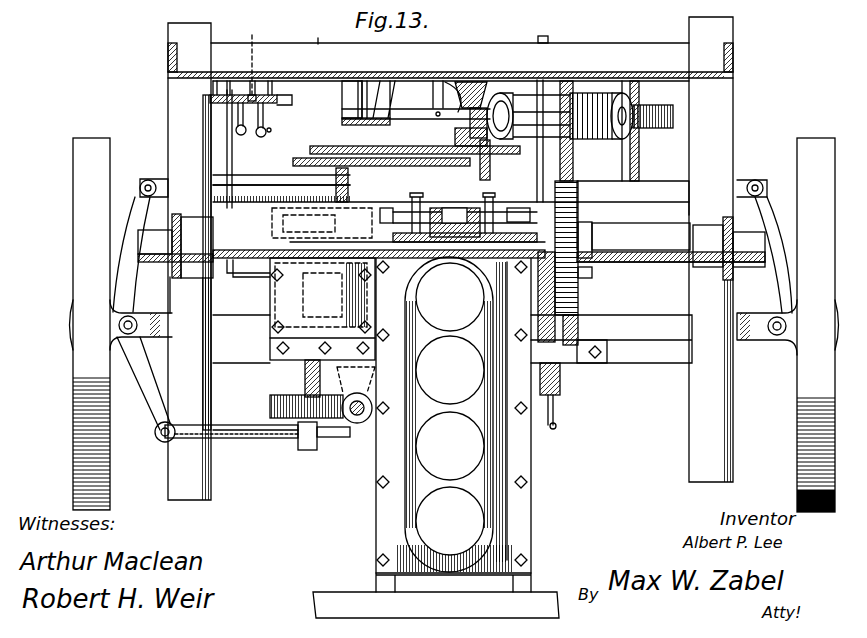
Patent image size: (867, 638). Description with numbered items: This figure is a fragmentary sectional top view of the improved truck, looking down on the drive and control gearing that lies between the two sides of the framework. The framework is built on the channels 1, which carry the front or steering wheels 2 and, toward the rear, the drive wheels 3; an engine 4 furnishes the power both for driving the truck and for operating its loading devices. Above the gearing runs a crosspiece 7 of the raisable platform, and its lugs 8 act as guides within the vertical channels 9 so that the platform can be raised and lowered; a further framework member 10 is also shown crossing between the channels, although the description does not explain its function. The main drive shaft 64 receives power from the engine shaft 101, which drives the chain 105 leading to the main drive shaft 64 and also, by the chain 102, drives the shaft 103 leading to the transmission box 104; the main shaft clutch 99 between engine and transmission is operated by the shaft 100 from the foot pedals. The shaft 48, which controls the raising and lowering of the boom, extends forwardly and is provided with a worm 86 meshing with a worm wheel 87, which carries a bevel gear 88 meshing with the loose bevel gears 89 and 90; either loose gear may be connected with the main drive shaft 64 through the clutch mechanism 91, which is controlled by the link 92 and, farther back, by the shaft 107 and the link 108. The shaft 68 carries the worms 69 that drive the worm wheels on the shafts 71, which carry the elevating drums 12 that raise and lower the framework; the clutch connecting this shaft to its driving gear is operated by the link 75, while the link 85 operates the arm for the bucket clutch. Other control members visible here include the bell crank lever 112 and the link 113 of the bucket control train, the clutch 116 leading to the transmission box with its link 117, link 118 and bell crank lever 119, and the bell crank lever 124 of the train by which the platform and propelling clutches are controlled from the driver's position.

The channel 1 is at (200, 492).
The front or steering wheel 2 is at (93, 150).
The drive wheel 3 is at (445, 601).
The engine 4 is at (493, 478).
The crosspiece 7 is at (318, 40).
The lug 8 is at (200, 62).
The vertical channel 9 is at (170, 67).
The main shaft 10 is at (194, 266).
The elevating drum 12 is at (190, 220).
The shaft 48 is at (640, 165).
The main drive shaft 64 is at (490, 165).
The shaft 68 is at (573, 160).
The worm 69 is at (592, 275).
The shaft 71 is at (663, 262).
The link 75 is at (255, 36).
The link 85 is at (548, 40).
The worm 86 is at (645, 105).
The worm wheel 87 is at (608, 92).
The bevel gear 88 is at (515, 95).
The loose bevel gear 89 is at (478, 82).
The loose bevel gear 90 is at (457, 138).
The clutch mechanism 91 is at (447, 82).
The link 92 is at (405, 113).
The main shaft clutch 99 is at (485, 207).
The shaft 100 is at (379, 249).
The engine shaft 101 is at (424, 210).
The chain 102 is at (300, 160).
The shaft 103 is at (327, 175).
The transmission box 104 is at (270, 297).
The chain 105 is at (335, 147).
The shaft 107 is at (398, 81).
The link 108 is at (350, 81).
The bell crank lever 112 is at (556, 410).
The link 113 is at (558, 426).
The clutch 116 is at (322, 287).
The link 117 is at (268, 277).
The link 118 is at (272, 174).
The bell crank lever 119 is at (223, 107).
The bell crank lever 124 is at (268, 124).